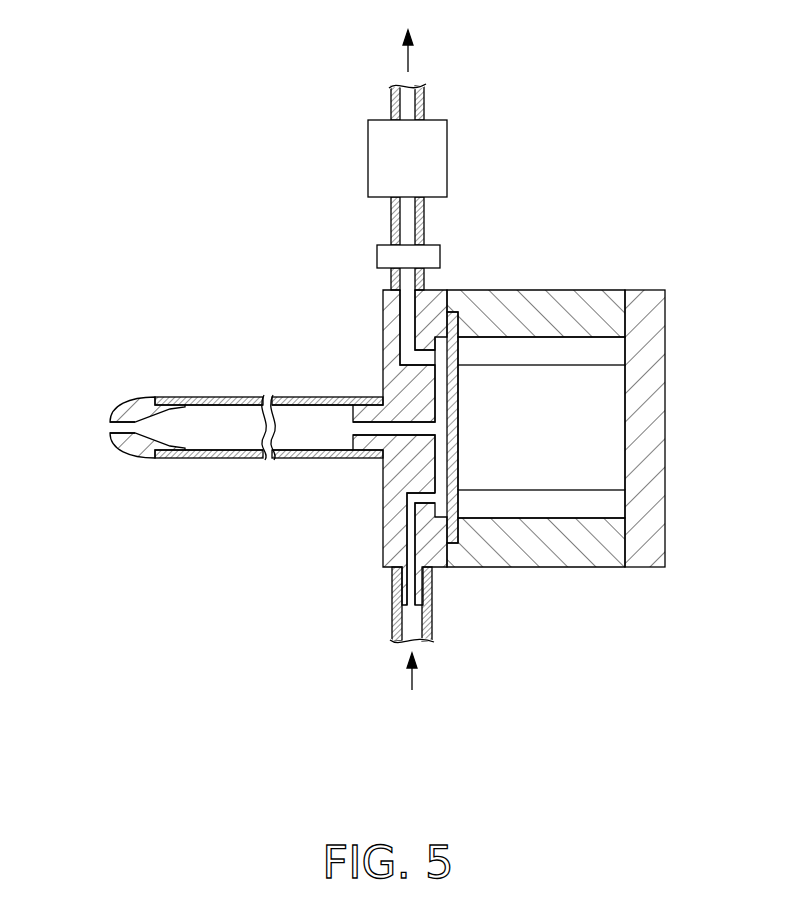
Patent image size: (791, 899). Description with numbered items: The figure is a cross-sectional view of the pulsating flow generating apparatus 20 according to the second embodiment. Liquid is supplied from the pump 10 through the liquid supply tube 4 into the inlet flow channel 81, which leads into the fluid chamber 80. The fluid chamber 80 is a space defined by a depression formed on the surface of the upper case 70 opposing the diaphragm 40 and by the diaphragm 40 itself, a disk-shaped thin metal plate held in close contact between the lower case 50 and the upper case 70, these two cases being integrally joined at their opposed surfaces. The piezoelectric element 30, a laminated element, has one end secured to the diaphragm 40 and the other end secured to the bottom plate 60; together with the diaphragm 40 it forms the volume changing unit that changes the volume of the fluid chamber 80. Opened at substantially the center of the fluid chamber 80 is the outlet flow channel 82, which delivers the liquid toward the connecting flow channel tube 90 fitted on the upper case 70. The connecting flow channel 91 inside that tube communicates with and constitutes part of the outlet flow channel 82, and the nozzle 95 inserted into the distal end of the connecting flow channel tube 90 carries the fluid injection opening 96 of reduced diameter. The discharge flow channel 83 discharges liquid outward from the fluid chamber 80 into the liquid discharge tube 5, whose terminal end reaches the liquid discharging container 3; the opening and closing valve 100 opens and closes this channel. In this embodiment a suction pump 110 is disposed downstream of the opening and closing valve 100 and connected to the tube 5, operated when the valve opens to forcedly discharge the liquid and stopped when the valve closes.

The liquid discharging container 3 is at (408, 37).
The liquid supply tube 4 is at (392, 622).
The liquid discharge tube 5 is at (392, 104).
The pump 10 is at (411, 688).
The pulsating flow generating apparatus 20 is at (602, 172).
The piezoelectric element 30 is at (540, 363).
The diaphragm 40 is at (458, 352).
The lower case 50 is at (600, 290).
The bottom plate 60 is at (648, 290).
The upper case 70 is at (383, 492).
The fluid chamber 80 is at (458, 463).
The inlet flow channel 81 is at (408, 532).
The outlet flow channel 82 is at (405, 423).
The discharge flow channel 83 is at (400, 303).
The connecting flow channel tube 90 is at (222, 396).
The connecting flow channel 91 is at (220, 434).
The nozzle 95 is at (150, 396).
The fluid injection opening 96 is at (110, 428).
The opening and closing valve 100 is at (377, 258).
The suction pump 110 is at (368, 160).